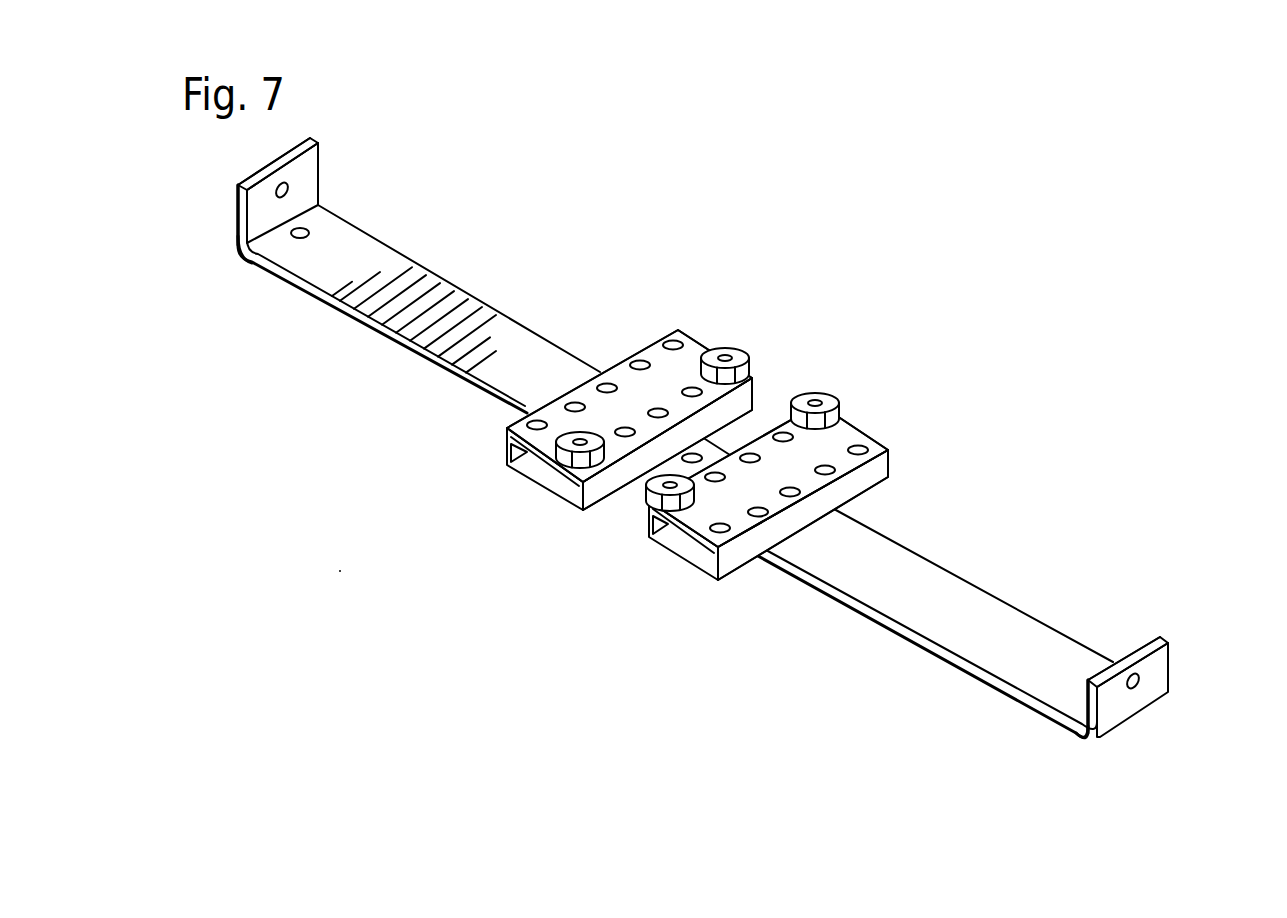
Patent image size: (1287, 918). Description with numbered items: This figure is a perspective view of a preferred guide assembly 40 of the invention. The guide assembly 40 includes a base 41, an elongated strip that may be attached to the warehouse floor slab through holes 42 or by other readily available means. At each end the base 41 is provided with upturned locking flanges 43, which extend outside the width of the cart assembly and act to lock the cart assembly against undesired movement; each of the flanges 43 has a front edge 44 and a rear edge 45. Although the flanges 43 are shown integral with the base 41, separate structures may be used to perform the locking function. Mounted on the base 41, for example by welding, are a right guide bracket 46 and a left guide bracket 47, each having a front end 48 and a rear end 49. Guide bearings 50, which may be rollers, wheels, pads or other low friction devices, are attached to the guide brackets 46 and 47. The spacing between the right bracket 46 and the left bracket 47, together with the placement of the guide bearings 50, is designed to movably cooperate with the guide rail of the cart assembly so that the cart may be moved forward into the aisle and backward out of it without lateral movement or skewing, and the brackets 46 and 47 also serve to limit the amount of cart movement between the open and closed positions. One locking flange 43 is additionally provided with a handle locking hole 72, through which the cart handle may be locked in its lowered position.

The guide assembly 40 is at (685, 436).
The base 41 is at (402, 265).
The holes 42 is at (307, 229).
The locking flanges 43 is at (318, 160).
The front edges 44 is at (238, 208).
The rear edges 45 is at (320, 173).
The right guide bracket 46 is at (887, 426).
The left guide bracket 47 is at (686, 321).
The front end 48 is at (582, 500).
The rear end 49 is at (690, 338).
The guide bearings 50 is at (750, 356).
The handle locking hole 72 is at (1143, 675).